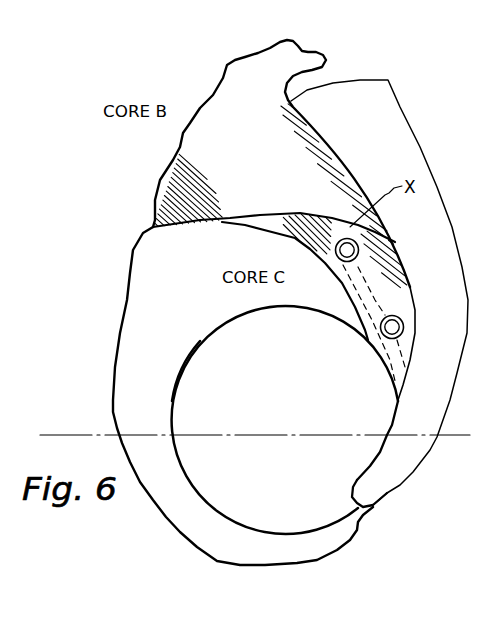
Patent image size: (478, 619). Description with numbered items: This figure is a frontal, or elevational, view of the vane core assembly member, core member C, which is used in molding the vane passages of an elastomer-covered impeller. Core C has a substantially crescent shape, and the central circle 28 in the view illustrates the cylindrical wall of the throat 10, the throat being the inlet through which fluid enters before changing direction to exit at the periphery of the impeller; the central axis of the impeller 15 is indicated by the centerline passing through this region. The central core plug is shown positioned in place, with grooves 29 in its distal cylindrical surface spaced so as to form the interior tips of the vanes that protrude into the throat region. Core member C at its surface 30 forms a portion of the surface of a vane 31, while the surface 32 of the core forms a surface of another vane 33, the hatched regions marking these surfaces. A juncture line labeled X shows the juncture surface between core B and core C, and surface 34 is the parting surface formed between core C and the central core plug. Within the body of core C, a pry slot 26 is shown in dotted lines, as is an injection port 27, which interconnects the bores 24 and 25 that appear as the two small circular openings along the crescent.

The throat inlet 10 is at (290, 389).
The central axis of the impeller 15 is at (219, 433).
The bore 24 is at (358, 250).
The bore 25 is at (404, 327).
The pry slot 26 is at (383, 370).
The injection port 27 is at (413, 357).
The central circle 28 is at (188, 366).
The grooves 29 is at (353, 490).
The surface of core member C 30 is at (413, 297).
The vane 31 is at (379, 292).
The surface of core C 32 is at (295, 238).
The vane 33 is at (274, 233).
The parting surface 34 is at (368, 342).